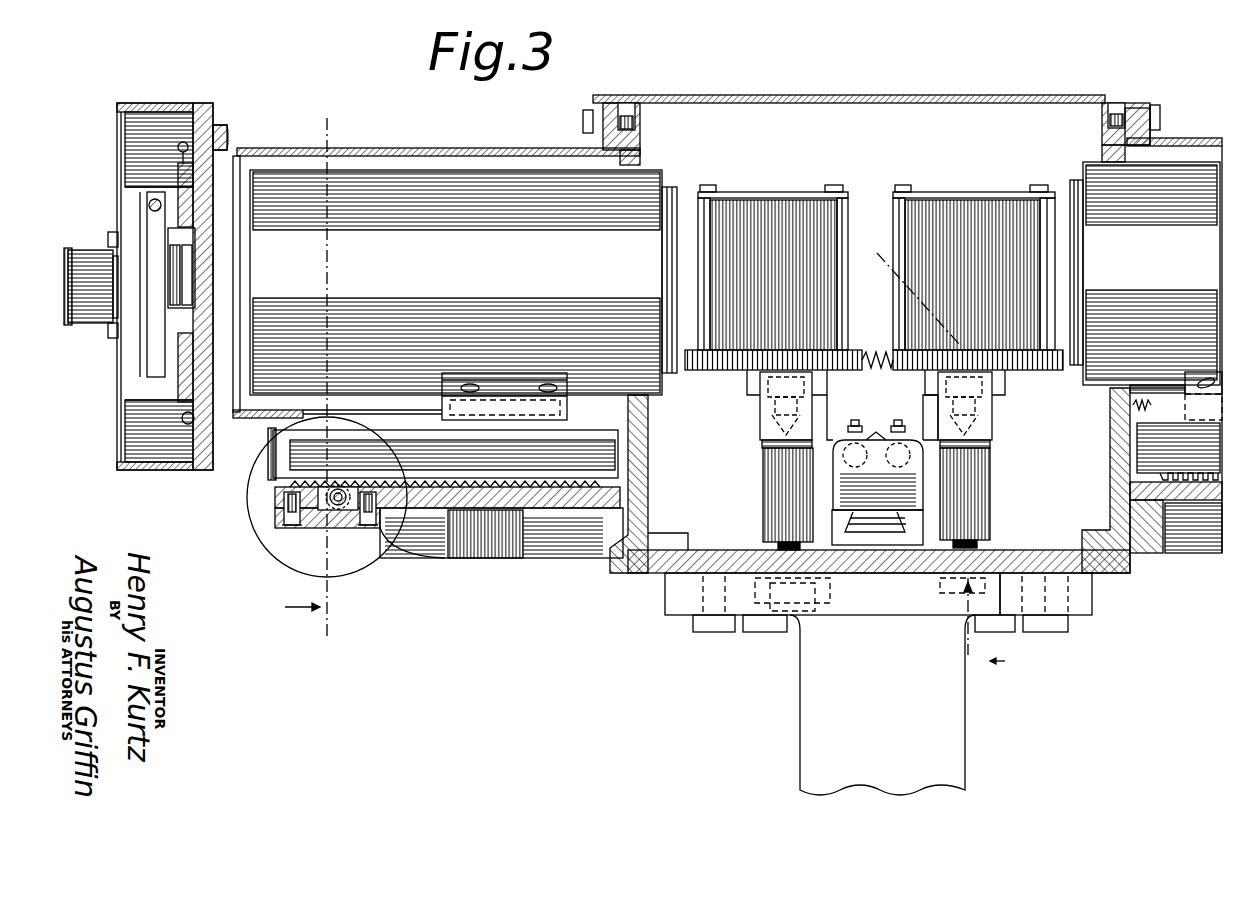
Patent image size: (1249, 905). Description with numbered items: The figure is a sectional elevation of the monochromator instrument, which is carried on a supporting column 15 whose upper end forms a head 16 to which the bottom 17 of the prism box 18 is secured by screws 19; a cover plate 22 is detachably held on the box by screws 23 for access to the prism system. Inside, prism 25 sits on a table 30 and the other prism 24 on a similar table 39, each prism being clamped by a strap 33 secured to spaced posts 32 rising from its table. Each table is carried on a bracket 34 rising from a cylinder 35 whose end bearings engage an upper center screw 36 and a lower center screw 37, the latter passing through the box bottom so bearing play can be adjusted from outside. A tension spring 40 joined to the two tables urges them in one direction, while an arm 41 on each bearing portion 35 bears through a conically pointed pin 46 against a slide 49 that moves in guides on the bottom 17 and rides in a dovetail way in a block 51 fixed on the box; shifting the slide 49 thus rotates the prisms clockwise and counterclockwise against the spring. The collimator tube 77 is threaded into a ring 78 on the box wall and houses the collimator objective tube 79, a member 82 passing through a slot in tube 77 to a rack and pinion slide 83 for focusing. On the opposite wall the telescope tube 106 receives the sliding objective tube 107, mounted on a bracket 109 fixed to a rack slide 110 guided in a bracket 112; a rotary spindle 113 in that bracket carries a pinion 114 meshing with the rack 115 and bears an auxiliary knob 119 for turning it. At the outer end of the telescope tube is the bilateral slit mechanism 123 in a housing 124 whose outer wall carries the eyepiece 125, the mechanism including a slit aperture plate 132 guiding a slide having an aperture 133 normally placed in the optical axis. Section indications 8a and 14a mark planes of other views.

The supporting column 15 is at (960, 752).
The head 16 is at (668, 595).
The bottom 17 is at (1120, 576).
The prism box 18 is at (622, 560).
The screws 19 is at (1040, 633).
The section line 14a is at (930, 452).
The cover plate 22 is at (892, 95).
The screws 23 is at (632, 100).
The prism 24 is at (975, 230).
The prism 25 is at (765, 230).
The table 30 is at (722, 372).
The posts 32 is at (1050, 215).
The strap 33 is at (805, 183).
The bracket 34 is at (770, 441).
The cylinder 35 is at (775, 465).
The upper center screw 36 is at (768, 410).
The lower center screw 37 is at (985, 545).
The table 39 is at (1055, 372).
The tension spring 40 is at (876, 372).
The arm 41 is at (830, 432).
The conically pointed pin 46 is at (876, 440).
The slide 49 is at (882, 452).
The block 51 is at (840, 522).
The tube 77 is at (1182, 138).
The ring 78 is at (1145, 108).
The collimator tube 79 is at (1145, 273).
The member 82 is at (1186, 396).
The rack and pinion slide 83 is at (1145, 464).
The tube 106 is at (455, 138).
The objective tube 107 is at (463, 282).
The bracket 109 is at (445, 396).
The rack slide 110 is at (618, 436).
The bracket 112 is at (280, 520).
The rotary spindle 113 is at (343, 512).
The pinion 114 is at (328, 502).
The rack 115 is at (462, 512).
The auxiliary knob 119 is at (405, 566).
The bilateral slit mechanism 123 is at (218, 128).
The housing 124 is at (140, 103).
The eyepiece 125 is at (96, 300).
The slit aperture plate 132 is at (175, 340).
The aperture 133 is at (180, 280).
The section line 8a is at (311, 384).